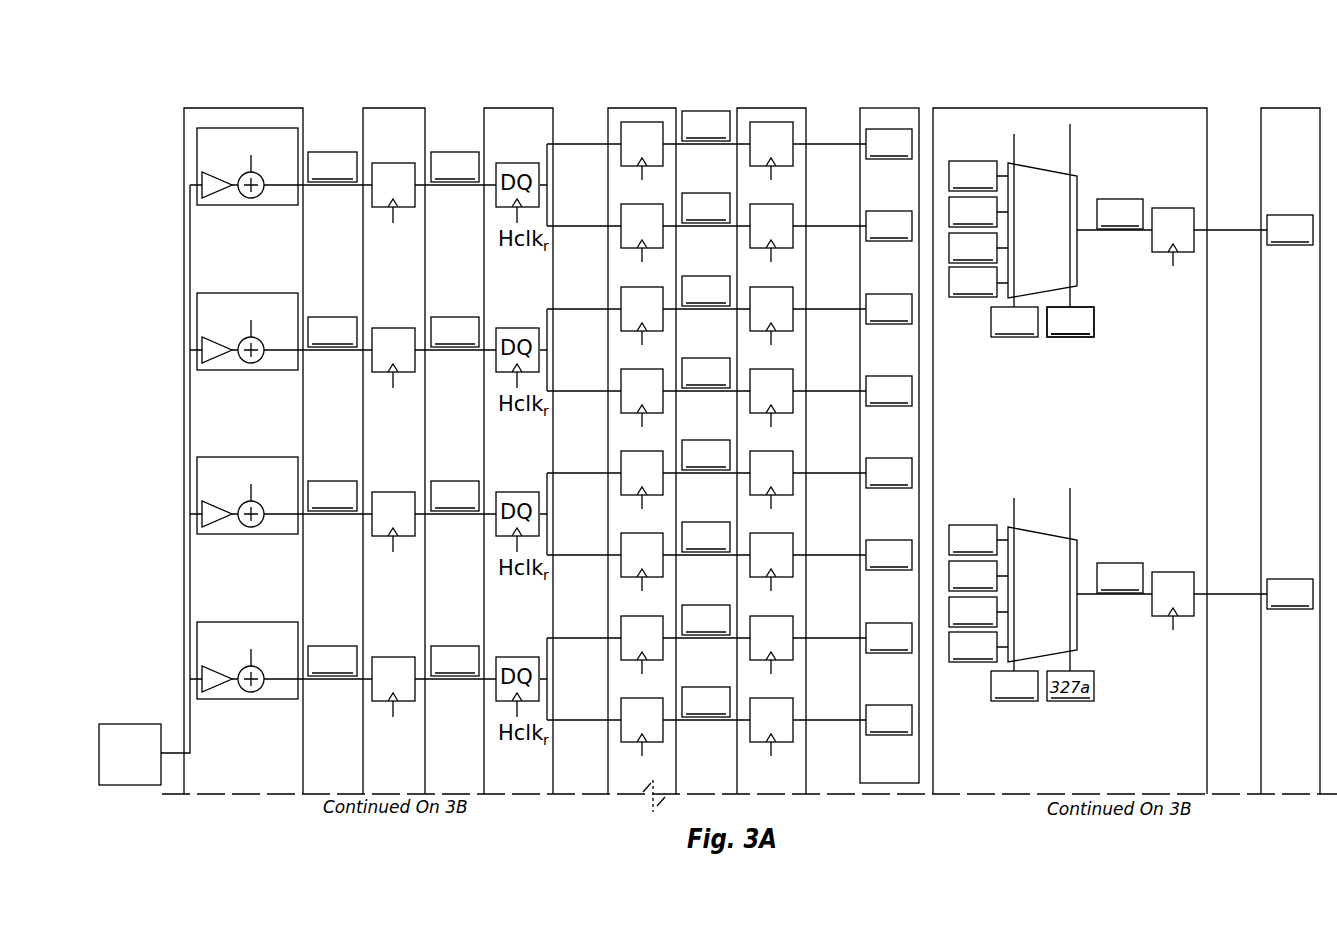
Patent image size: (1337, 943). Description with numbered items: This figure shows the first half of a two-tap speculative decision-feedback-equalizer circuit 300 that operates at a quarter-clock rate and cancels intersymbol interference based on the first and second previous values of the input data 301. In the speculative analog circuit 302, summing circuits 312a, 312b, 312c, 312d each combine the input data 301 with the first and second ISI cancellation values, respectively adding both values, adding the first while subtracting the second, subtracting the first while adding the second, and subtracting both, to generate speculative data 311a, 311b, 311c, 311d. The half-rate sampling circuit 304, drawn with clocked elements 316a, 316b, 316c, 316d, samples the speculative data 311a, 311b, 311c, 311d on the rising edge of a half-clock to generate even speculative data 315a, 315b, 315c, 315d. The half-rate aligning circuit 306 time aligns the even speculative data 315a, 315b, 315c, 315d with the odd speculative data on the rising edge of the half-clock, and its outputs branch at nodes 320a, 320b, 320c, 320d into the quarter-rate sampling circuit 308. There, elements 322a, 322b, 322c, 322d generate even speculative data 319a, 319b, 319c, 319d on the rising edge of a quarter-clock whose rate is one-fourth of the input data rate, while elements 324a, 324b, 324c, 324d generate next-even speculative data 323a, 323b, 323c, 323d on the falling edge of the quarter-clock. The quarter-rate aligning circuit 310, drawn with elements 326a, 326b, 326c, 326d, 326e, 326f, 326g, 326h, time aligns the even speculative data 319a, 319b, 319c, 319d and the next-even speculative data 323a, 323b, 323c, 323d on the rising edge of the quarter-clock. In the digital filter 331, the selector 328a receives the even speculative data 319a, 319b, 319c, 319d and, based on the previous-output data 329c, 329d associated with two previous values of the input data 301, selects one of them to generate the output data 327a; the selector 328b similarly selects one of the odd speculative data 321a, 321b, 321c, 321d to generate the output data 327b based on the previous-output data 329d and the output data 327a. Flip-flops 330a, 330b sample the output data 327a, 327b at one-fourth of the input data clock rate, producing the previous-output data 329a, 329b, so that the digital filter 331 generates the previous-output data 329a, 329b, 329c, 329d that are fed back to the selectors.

The two-tap speculative DFE circuit 300 is at (1222, 80).
The input data 301 is at (152, 722).
The speculative analog circuit 302 is at (218, 100).
The half-rate sampling circuit 304 is at (399, 100).
The half-rate aligning circuit 306 is at (514, 100).
The quarter-rate sampling circuit 308 is at (637, 100).
The quarter-rate aligning circuit 310 is at (765, 100).
The speculative data 311a is at (332, 167).
The speculative data 311b is at (332, 332).
The speculative data 311c is at (332, 496).
The speculative data 311d is at (332, 661).
The summing circuit 312a is at (226, 211).
The summing circuit 312b is at (226, 376).
The summing circuit 312c is at (226, 540).
The summing circuit 312d is at (226, 705).
The even speculative data 315a is at (455, 167).
The even speculative data 315b is at (455, 332).
The even speculative data 315c is at (455, 496).
The even speculative data 315d is at (455, 661).
The flip-flop 316a is at (415, 197).
The flip-flop 316b is at (415, 362).
The flip-flop 316c is at (415, 526).
The flip-flop 316d is at (415, 691).
The even speculative data 319a is at (839, 151).
The even speculative data 319b is at (839, 260).
The even speculative data 319c is at (839, 360).
The even speculative data 319d is at (839, 460).
The branch node 320a is at (548, 170).
The branch node 320b is at (548, 335).
The branch node 320c is at (548, 499).
The branch node 320d is at (548, 664).
The odd speculative data 321a is at (973, 540).
The odd speculative data 321b is at (973, 576).
The odd speculative data 321c is at (973, 612).
The odd speculative data 321d is at (973, 647).
The rising-edge flip-flop 322a is at (663, 155).
The rising-edge flip-flop 322b is at (663, 320).
The rising-edge flip-flop 322c is at (663, 484).
The rising-edge flip-flop 322d is at (663, 649).
The next-even speculative data 323a is at (797, 217).
The next-even speculative data 323b is at (797, 382).
The next-even speculative data 323c is at (797, 546).
The next-even speculative data 323d is at (797, 711).
The falling-edge flip-flop 324a is at (663, 237).
The falling-edge flip-flop 324b is at (663, 402).
The falling-edge flip-flop 324c is at (663, 566).
The falling-edge flip-flop 324d is at (663, 731).
The retiming flip-flop 326a is at (793, 128).
The retiming flip-flop 326b is at (793, 210).
The retiming flip-flop 326c is at (793, 293).
The retiming flip-flop 326d is at (793, 375).
The retiming flip-flop 326e is at (793, 457).
The retiming flip-flop 326f is at (793, 539).
The retiming flip-flop 326g is at (793, 622).
The retiming flip-flop 326h is at (793, 704).
The output data 327a is at (1095, 268).
The output data 327b is at (1120, 578).
The selector 328a is at (1014, 162).
The selector 328b is at (1014, 526).
The previous-output data 329a is at (1290, 230).
The previous-output data 329b is at (1290, 594).
The previous-output data 329c is at (1014, 322).
The previous-output data 329d is at (1042, 504).
The flip-flop 330a is at (1194, 215).
The flip-flop 330b is at (1194, 579).
The digital filter 331 is at (1090, 100).